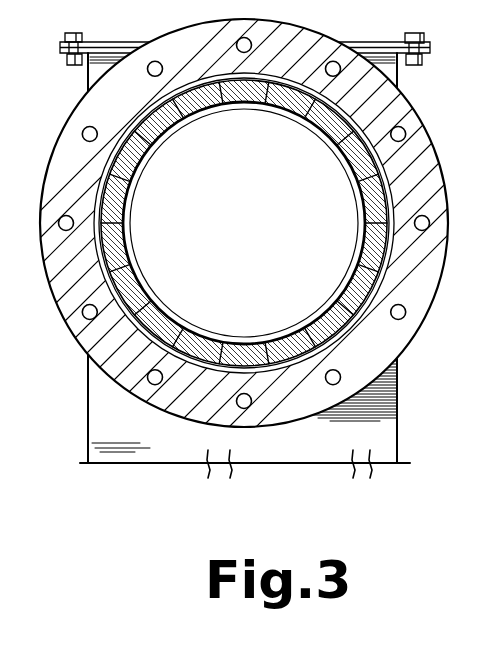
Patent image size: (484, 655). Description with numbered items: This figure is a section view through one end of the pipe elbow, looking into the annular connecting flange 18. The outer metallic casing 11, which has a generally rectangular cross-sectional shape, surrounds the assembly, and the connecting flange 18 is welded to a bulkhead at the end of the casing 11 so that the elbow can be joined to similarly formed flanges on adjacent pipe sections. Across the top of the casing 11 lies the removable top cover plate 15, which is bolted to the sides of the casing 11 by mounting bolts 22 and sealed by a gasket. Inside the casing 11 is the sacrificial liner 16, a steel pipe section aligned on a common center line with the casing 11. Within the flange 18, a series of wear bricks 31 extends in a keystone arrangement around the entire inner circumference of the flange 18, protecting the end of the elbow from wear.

The outer metallic casing 11 is at (100, 427).
The removable top cover plate 15 is at (133, 42).
The sacrificial liner 16 is at (262, 102).
The connecting flange 18 is at (46, 166).
The mounting bolts 22 is at (79, 33).
The wear bricks 31 is at (224, 345).